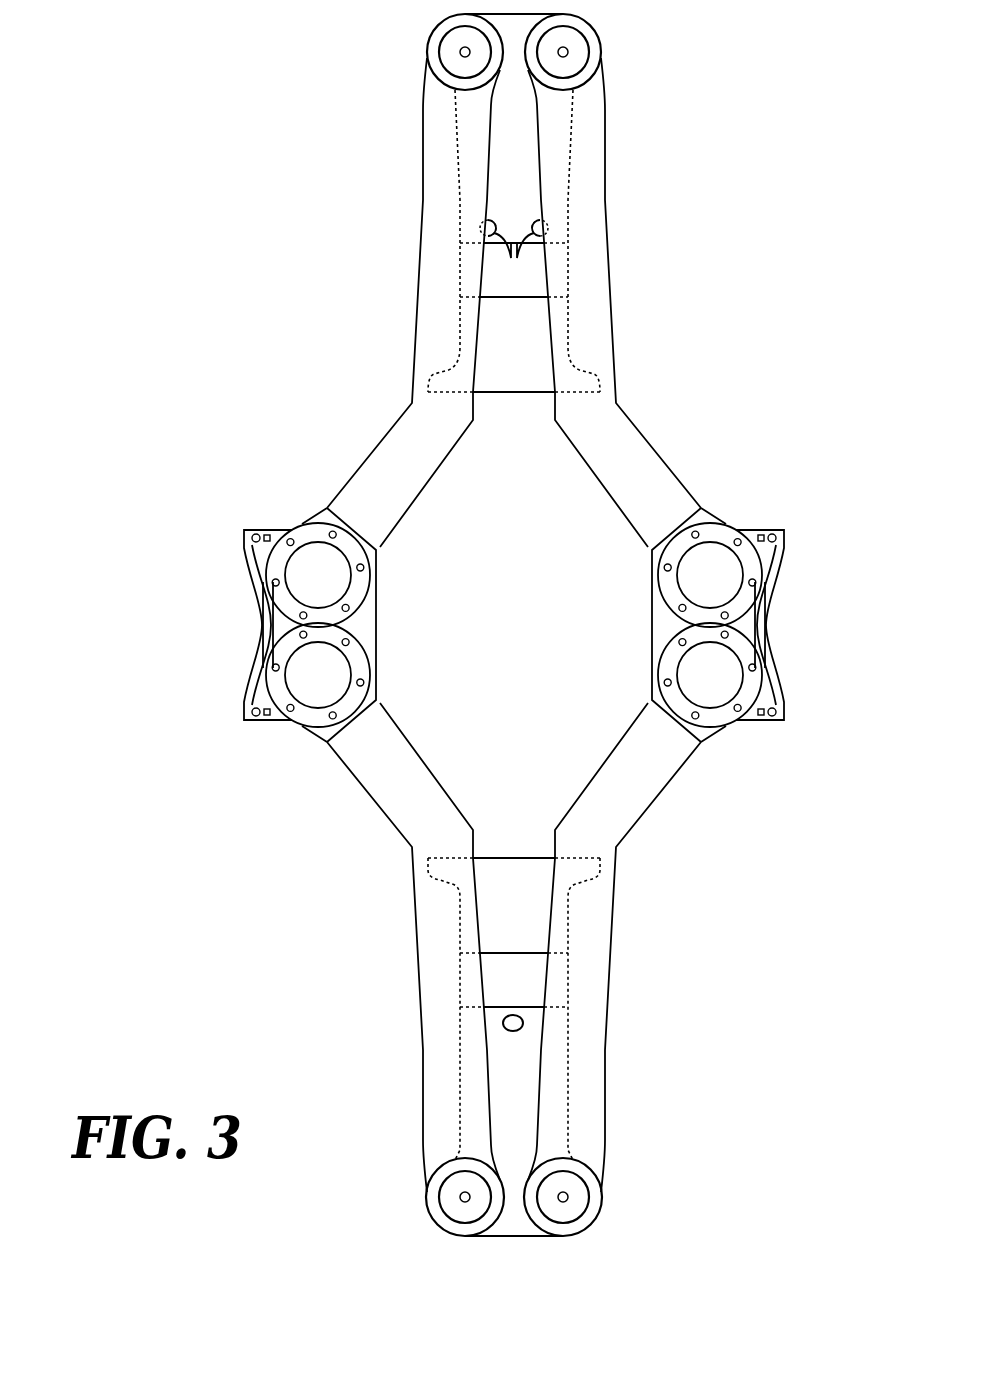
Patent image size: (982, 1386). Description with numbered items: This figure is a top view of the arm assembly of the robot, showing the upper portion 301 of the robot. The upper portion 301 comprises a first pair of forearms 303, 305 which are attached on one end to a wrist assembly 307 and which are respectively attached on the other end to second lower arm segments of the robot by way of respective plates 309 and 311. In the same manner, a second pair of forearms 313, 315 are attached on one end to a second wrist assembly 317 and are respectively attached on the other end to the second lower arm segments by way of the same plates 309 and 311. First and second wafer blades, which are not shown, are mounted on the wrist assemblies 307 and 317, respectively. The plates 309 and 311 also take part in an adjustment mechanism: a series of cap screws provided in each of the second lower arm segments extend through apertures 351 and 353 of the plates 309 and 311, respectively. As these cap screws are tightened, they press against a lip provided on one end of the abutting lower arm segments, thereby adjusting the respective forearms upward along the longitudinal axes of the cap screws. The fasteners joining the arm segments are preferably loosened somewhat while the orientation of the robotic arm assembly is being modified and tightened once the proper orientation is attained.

The upper portion 301 is at (205, 80).
The forearm 303 is at (374, 797).
The forearm 305 is at (378, 442).
The wrist assembly 307 is at (228, 627).
The plate 309 is at (672, 217).
The plate 311 is at (515, 393).
The forearm 313 is at (654, 797).
The forearm 315 is at (662, 457).
The wrist assembly 317 is at (800, 626).
The aperture 351 is at (510, 1013).
The aperture 353 is at (514, 255).